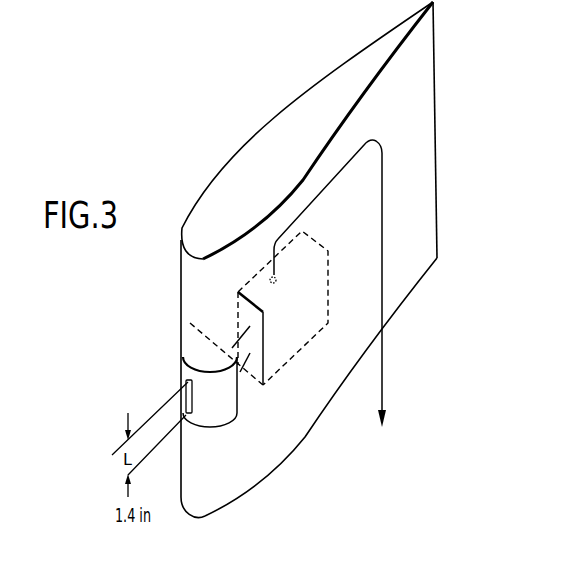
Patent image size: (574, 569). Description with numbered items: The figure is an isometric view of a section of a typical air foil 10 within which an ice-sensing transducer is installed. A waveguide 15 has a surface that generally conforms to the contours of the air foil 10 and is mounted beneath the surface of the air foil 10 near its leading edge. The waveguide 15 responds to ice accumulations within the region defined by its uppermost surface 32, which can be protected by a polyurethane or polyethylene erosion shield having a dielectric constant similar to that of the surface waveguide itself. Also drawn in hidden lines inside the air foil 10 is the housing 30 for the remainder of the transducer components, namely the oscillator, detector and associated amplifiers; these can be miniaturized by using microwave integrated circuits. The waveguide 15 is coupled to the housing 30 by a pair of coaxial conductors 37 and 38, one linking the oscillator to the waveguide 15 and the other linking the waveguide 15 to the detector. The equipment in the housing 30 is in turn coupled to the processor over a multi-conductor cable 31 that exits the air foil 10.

The air foil 10 is at (181, 496).
The waveguide 15 is at (193, 345).
The housing 30 is at (318, 336).
The multi-conductor cable 31 is at (385, 392).
The uppermost surface 32 is at (192, 405).
The coaxial conductor 37 is at (237, 338).
The coaxial conductor 38 is at (245, 371).